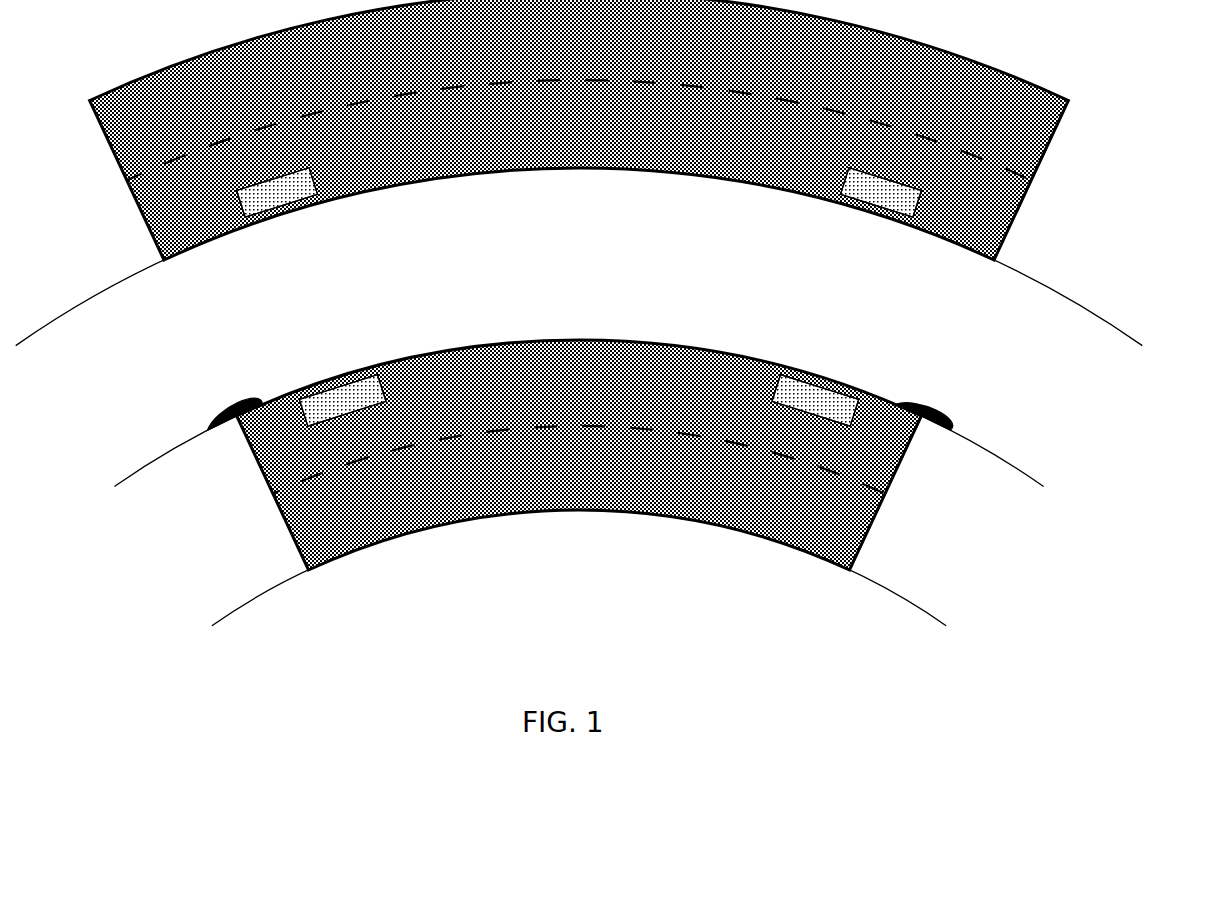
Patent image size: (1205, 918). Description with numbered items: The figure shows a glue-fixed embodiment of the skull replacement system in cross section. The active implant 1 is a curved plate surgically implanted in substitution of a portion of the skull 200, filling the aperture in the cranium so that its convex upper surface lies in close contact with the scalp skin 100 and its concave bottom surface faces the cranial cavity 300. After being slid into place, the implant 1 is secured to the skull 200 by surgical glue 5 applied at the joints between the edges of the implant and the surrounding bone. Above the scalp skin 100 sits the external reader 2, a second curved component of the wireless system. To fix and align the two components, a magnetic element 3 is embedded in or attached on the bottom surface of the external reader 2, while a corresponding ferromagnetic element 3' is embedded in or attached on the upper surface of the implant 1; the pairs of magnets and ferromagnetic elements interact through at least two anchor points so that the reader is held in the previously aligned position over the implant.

The active implant 1 is at (579, 455).
The external reader 2 is at (579, 130).
The magnetic element 3 is at (579, 220).
The ferromagnetic element 3' is at (581, 356).
The surgical glue 5 is at (201, 414).
The scalp skin 100 is at (579, 257).
The skull 200 is at (578, 474).
The cranial cavity 300 is at (579, 568).